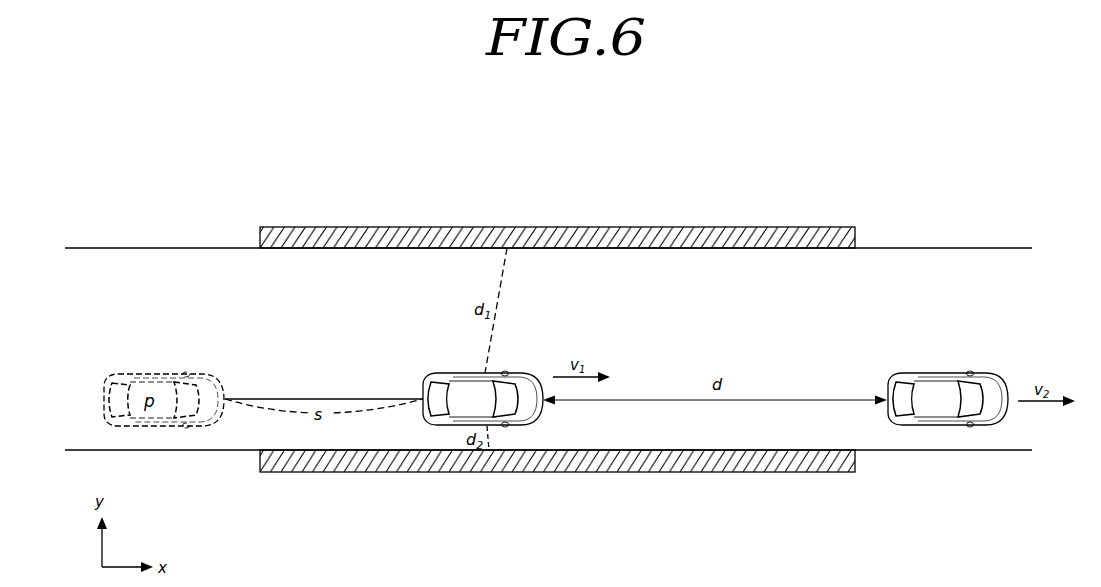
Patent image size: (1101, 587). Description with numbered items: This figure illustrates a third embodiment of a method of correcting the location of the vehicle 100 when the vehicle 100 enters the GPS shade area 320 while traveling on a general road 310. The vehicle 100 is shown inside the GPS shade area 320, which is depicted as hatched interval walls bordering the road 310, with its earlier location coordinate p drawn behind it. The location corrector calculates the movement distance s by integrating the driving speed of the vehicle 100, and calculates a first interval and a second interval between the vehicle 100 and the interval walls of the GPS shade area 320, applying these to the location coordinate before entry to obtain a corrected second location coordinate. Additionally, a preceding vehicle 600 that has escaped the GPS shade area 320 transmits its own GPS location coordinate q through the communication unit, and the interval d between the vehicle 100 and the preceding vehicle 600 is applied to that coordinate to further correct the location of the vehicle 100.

The general road 310 is at (160, 230).
The GPS shade area 320 is at (617, 204).
The vehicle 100 is at (508, 426).
The preceding vehicle 600 is at (947, 427).